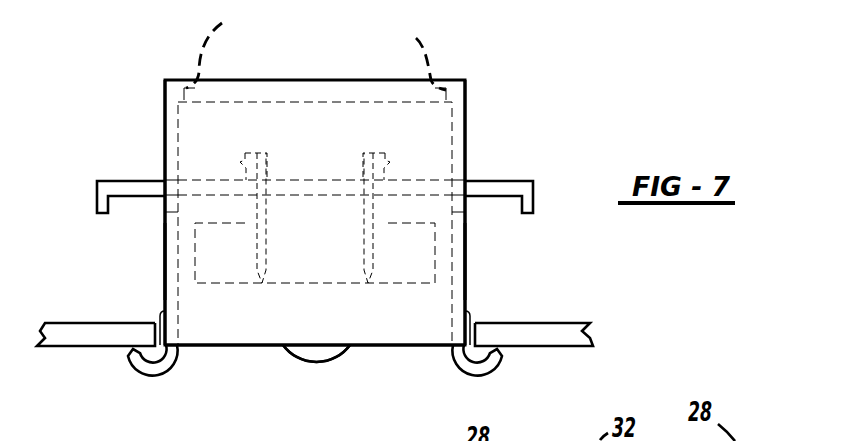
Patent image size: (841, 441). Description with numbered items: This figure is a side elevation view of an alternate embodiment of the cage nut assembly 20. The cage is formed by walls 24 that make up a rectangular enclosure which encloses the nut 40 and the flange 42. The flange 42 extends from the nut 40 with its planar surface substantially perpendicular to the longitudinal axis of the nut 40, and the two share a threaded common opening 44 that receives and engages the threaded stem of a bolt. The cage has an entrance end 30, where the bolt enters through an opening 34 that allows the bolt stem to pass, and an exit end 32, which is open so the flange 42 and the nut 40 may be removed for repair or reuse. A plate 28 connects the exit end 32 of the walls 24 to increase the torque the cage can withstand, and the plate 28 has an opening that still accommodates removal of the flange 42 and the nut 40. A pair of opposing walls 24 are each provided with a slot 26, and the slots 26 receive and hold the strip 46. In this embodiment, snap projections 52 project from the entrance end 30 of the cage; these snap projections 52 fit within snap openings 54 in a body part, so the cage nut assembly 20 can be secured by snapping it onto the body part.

The cage nut assembly 20 is at (502, 78).
The walls 24 is at (166, 264).
The slots 26 is at (172, 168).
The plate 28 is at (316, 48).
The entrance end 30 is at (260, 313).
The exit end 32 is at (329, 120).
The opening 34 is at (335, 256).
The nut 40 is at (387, 155).
The flange 42 is at (433, 258).
The common opening 44 is at (310, 389).
The strip 46 is at (137, 198).
The snap projections 52 is at (133, 363).
The snap openings 54 is at (161, 330).